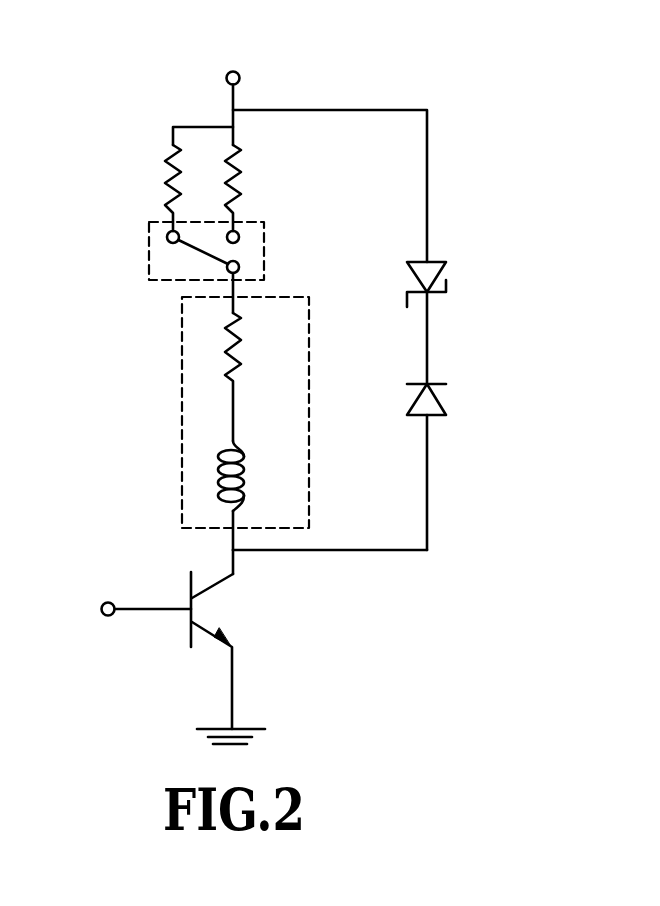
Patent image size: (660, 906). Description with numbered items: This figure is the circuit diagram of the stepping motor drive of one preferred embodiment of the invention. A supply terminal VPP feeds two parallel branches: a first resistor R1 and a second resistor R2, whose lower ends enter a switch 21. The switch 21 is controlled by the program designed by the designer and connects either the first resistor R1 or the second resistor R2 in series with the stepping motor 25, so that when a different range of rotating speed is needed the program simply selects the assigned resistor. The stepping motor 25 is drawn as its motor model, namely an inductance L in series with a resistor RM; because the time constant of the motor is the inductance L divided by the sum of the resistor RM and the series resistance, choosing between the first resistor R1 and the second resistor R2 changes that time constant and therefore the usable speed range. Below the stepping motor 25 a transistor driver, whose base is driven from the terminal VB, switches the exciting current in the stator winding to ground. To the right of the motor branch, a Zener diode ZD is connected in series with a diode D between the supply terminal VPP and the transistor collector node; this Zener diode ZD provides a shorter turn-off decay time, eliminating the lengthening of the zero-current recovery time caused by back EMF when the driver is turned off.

The switch 21 is at (149, 261).
The stepping motor 25 is at (282, 420).
The supply voltage terminal VPP is at (242, 86).
The first resistor R1 is at (150, 188).
The second resistor R2 is at (258, 188).
The resistor RM is at (259, 377).
The inductance L is at (247, 495).
The Zener diode ZD is at (446, 293).
The diode D is at (446, 416).
The base voltage terminal VB is at (122, 608).